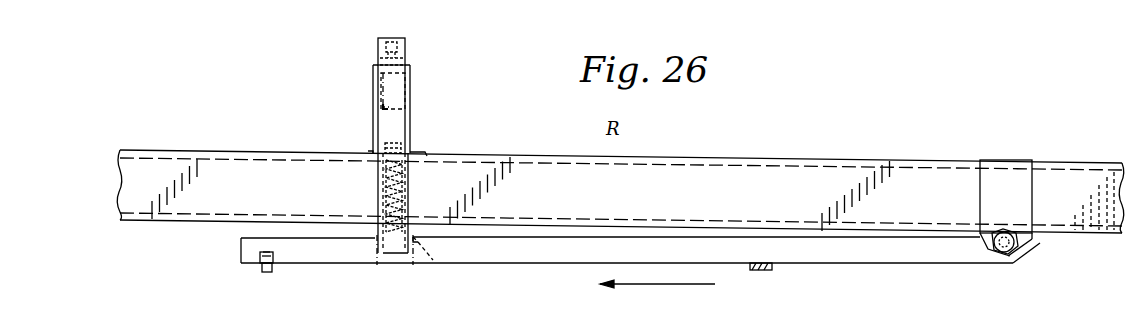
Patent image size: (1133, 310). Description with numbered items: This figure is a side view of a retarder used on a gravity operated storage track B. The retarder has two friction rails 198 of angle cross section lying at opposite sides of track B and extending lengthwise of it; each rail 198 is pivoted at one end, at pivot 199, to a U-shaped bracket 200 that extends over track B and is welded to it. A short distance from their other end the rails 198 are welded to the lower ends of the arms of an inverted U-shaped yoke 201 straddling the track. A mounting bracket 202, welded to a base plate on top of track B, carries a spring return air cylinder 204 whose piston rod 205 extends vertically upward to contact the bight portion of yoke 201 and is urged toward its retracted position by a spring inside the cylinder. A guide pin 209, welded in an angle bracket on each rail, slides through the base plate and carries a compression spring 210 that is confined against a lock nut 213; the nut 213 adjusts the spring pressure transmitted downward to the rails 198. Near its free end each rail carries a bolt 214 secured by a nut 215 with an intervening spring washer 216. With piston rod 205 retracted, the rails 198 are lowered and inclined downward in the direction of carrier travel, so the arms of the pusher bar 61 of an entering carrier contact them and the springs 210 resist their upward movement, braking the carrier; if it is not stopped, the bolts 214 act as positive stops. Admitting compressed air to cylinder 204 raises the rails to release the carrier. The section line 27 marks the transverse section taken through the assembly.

The section line 27- 27 is at (315, 120).
The pusher bar 61 is at (768, 268).
The friction members or rails 198 is at (546, 263).
The pivot 199 is at (1028, 246).
The U-shaped bracket 200 is at (1032, 190).
The yoke 201 is at (403, 128).
The mounting bracket 202 is at (381, 108).
The spring return air cylinder 204 is at (397, 90).
The piston rod 205 is at (405, 45).
The guide pin 209 is at (394, 147).
The compression spring 210 is at (383, 180).
The lock nut 213 is at (432, 262).
The bolt 214 is at (263, 271).
The nut 215 is at (261, 256).
The spring washer 216 is at (272, 256).
The track B is at (874, 162).